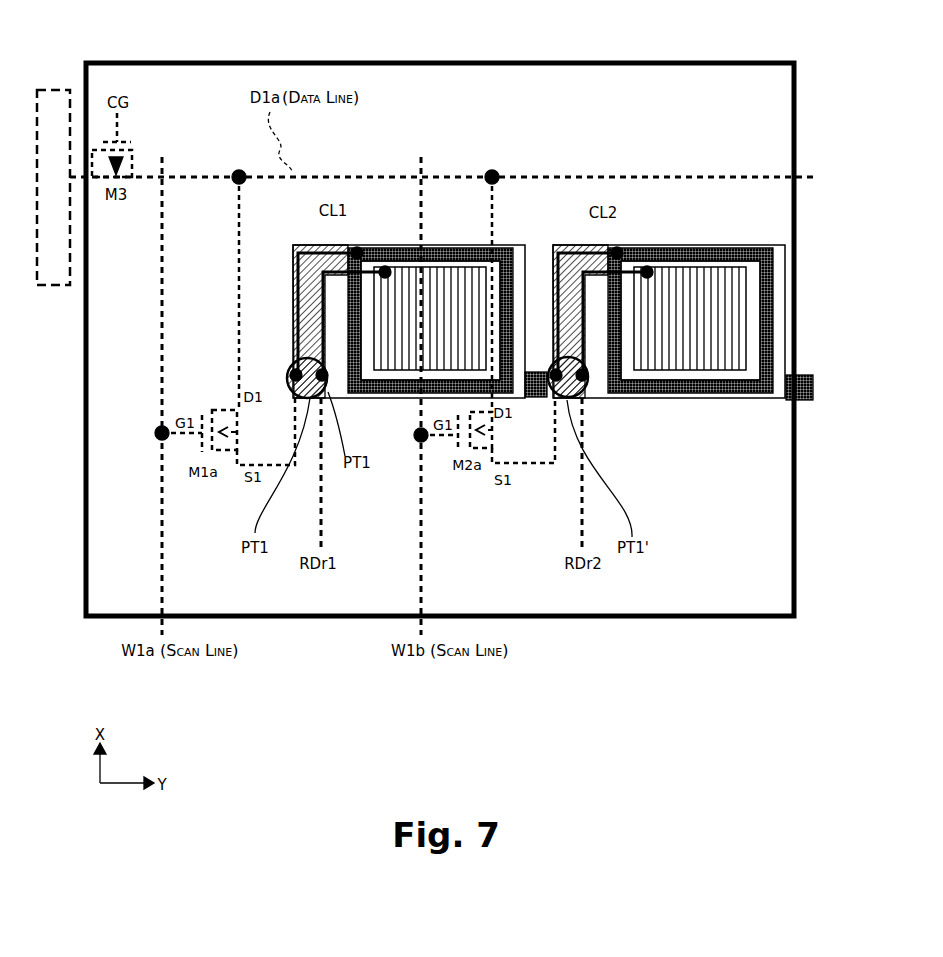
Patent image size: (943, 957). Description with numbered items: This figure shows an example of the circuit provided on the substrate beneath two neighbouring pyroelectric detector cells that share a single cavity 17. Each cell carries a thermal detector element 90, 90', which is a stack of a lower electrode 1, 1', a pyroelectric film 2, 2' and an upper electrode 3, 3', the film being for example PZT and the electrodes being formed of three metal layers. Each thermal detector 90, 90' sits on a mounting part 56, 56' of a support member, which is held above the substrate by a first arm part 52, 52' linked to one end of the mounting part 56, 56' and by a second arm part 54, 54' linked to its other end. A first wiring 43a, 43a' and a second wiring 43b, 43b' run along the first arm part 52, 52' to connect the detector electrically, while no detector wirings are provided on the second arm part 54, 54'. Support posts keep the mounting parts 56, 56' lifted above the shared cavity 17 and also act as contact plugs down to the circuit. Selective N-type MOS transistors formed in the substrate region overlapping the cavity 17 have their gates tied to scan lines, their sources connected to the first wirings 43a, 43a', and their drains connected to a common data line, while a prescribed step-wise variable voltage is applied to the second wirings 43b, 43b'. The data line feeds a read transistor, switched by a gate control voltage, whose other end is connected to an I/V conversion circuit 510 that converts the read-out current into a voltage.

The shared cavity 17 is at (664, 597).
The I/V conversion circuit 510 is at (67, 285).
The first arm part 52 is at (305, 319).
The first arm part 52' is at (573, 307).
The first wiring 43a is at (306, 314).
The second wiring 43b is at (353, 351).
The first wiring 43a' is at (570, 343).
The second wiring 43b' is at (614, 370).
The second arm part 54 is at (409, 387).
The second arm part 54' is at (669, 366).
The mounting part 56 is at (528, 415).
The mounting part 56' is at (806, 426).
The thermal detector element 90 is at (430, 241).
The thermal detector element 90' is at (690, 241).
The lower electrode 1 is at (430, 257).
The pyroelectric film 2 is at (430, 251).
The upper electrode 3 is at (430, 246).
The lower electrode 1' is at (690, 258).
The pyroelectric film 2' is at (690, 252).
The upper electrode 3' is at (690, 247).